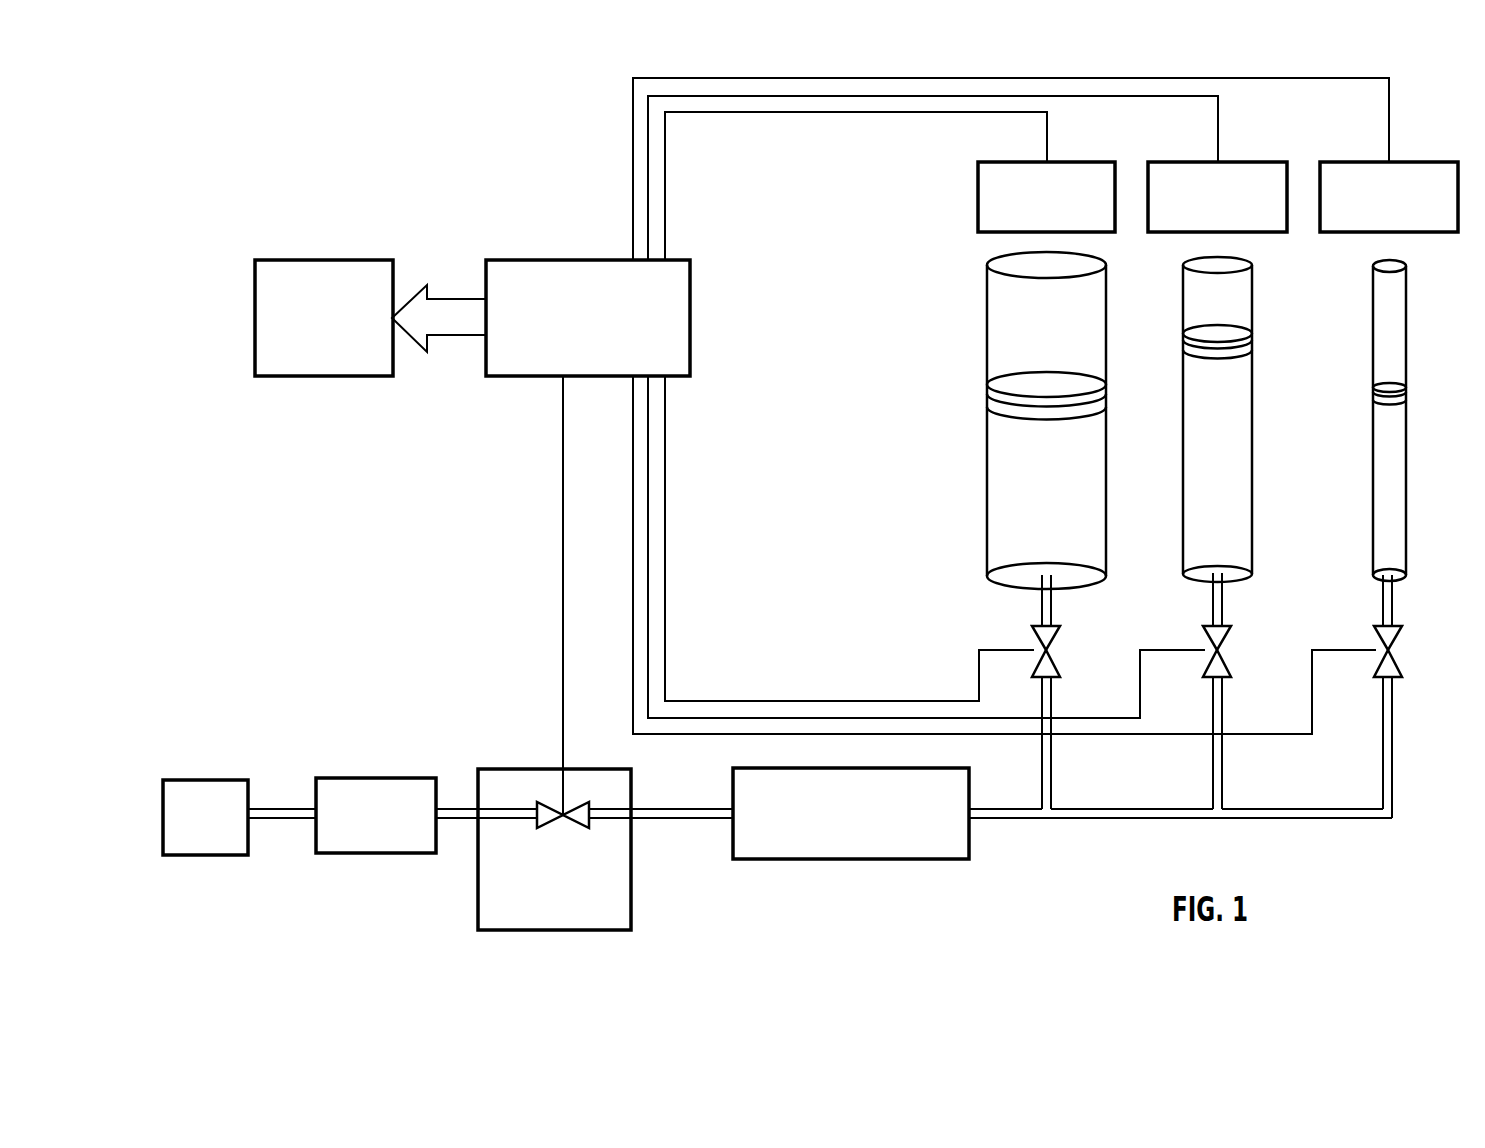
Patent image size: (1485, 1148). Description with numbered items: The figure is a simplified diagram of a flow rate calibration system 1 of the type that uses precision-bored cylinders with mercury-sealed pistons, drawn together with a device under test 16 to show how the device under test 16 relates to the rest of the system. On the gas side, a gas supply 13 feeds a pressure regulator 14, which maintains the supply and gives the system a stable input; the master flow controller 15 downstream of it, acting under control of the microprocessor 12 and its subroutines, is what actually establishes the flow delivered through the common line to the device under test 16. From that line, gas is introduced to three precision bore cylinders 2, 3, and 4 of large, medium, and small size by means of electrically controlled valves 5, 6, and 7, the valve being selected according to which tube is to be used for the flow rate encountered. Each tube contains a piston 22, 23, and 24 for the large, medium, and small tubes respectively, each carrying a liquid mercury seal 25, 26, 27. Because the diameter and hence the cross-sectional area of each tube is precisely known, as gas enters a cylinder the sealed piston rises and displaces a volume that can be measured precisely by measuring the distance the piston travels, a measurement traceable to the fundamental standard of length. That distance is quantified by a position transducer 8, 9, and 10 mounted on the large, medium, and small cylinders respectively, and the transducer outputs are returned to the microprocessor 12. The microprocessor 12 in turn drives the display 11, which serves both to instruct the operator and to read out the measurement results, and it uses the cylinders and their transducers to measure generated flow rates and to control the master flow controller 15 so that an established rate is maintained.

The flow rate calibration system 1 is at (233, 138).
The precision bore cylinder 2 is at (988, 308).
The precision bore cylinder 3 is at (1183, 305).
The precision bore cylinder 4 is at (1373, 310).
The electrically controlled valve 5 is at (1055, 638).
The electrically controlled valve 6 is at (1227, 638).
The electrically controlled valve 7 is at (1398, 638).
The position transducer 8 is at (1096, 167).
The position transducer 9 is at (1272, 167).
The position transducer 10 is at (1443, 167).
The display 11 is at (353, 265).
The microprocessor 12 is at (543, 265).
The gas supply 13 is at (215, 782).
The pressure regulator 14 is at (393, 782).
The master flow controller 15 is at (500, 773).
The device under test 16 is at (931, 855).
The piston 22 is at (1021, 402).
The piston 23 is at (1192, 356).
The piston 24 is at (1359, 403).
The liquid mercury seal 25 is at (990, 392).
The liquid mercury seal 26 is at (1185, 343).
The liquid mercury seal 27 is at (1377, 403).